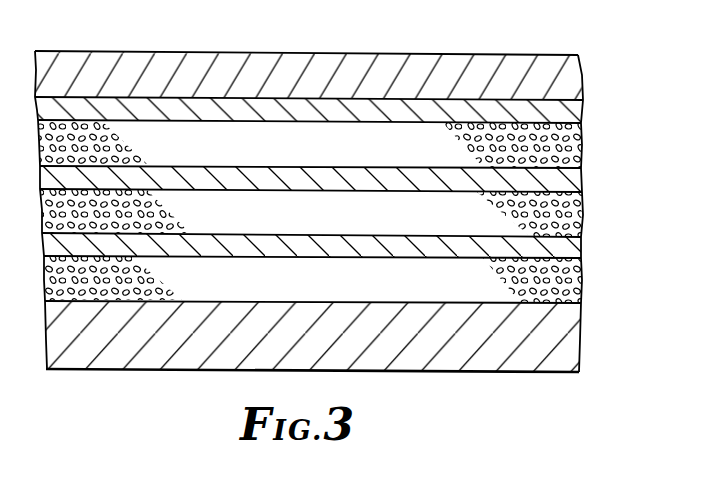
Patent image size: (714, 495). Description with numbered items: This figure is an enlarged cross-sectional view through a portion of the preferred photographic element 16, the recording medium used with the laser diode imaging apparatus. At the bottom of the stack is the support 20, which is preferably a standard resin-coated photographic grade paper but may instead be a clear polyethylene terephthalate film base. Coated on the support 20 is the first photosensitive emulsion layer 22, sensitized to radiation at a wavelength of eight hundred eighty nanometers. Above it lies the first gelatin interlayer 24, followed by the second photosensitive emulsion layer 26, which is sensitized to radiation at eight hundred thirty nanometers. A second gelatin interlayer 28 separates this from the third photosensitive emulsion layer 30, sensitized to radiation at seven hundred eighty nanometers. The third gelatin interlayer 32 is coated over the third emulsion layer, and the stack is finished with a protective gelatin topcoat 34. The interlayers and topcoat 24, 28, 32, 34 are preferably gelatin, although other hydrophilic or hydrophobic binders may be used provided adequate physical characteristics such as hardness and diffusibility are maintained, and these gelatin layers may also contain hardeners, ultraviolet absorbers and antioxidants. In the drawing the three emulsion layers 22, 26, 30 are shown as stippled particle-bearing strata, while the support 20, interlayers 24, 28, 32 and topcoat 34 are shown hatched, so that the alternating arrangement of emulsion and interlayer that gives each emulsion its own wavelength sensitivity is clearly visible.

The photographic element 16 is at (87, 51).
The support 20 is at (573, 340).
The first photosensitive emulsion layer 22 is at (579, 284).
The first gelatin interlayer 24 is at (581, 249).
The second photosensitive emulsion layer 26 is at (580, 214).
The second gelatin interlayer 28 is at (576, 182).
The third photosensitive emulsion layer 30 is at (580, 147).
The third gelatin interlayer 32 is at (576, 112).
The protective gelatin topcoat 34 is at (572, 75).